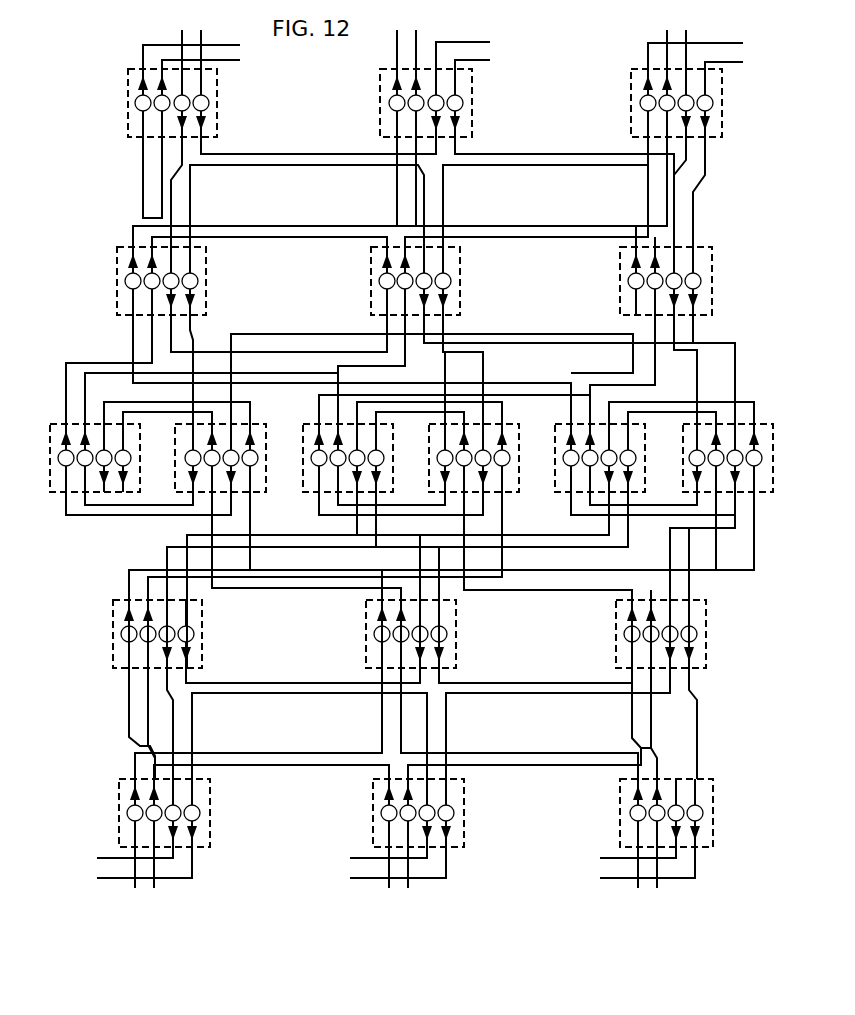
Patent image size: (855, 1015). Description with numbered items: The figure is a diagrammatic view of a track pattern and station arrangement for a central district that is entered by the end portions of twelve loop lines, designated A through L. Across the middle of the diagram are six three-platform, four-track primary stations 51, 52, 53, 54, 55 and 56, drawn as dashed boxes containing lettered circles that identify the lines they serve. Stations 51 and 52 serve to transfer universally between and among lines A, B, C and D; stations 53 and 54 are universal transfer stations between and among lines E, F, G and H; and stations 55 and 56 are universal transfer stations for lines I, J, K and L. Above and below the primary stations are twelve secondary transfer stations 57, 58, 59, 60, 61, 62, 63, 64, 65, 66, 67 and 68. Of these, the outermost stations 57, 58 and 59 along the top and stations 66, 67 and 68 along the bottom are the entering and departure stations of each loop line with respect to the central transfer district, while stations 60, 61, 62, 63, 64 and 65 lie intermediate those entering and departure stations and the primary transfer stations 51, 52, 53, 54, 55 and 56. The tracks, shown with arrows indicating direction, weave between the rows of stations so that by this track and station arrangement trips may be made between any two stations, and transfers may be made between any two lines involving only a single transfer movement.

The primary station 51 is at (140, 460).
The primary station 52 is at (266, 460).
The primary station 53 is at (393, 460).
The primary station 54 is at (519, 460).
The primary station 55 is at (645, 460).
The primary station 56 is at (773, 460).
The secondary transfer station 57 is at (472, 104).
The secondary transfer station 58 is at (722, 104).
The secondary transfer station 59 is at (217, 104).
The secondary transfer station 60 is at (206, 282).
The secondary transfer station 61 is at (460, 282).
The secondary transfer station 62 is at (712, 282).
The secondary transfer station 63 is at (202, 635).
The secondary transfer station 64 is at (456, 635).
The secondary transfer station 65 is at (706, 635).
The secondary transfer station 66 is at (464, 814).
The secondary transfer station 67 is at (713, 814).
The secondary transfer station 68 is at (210, 814).